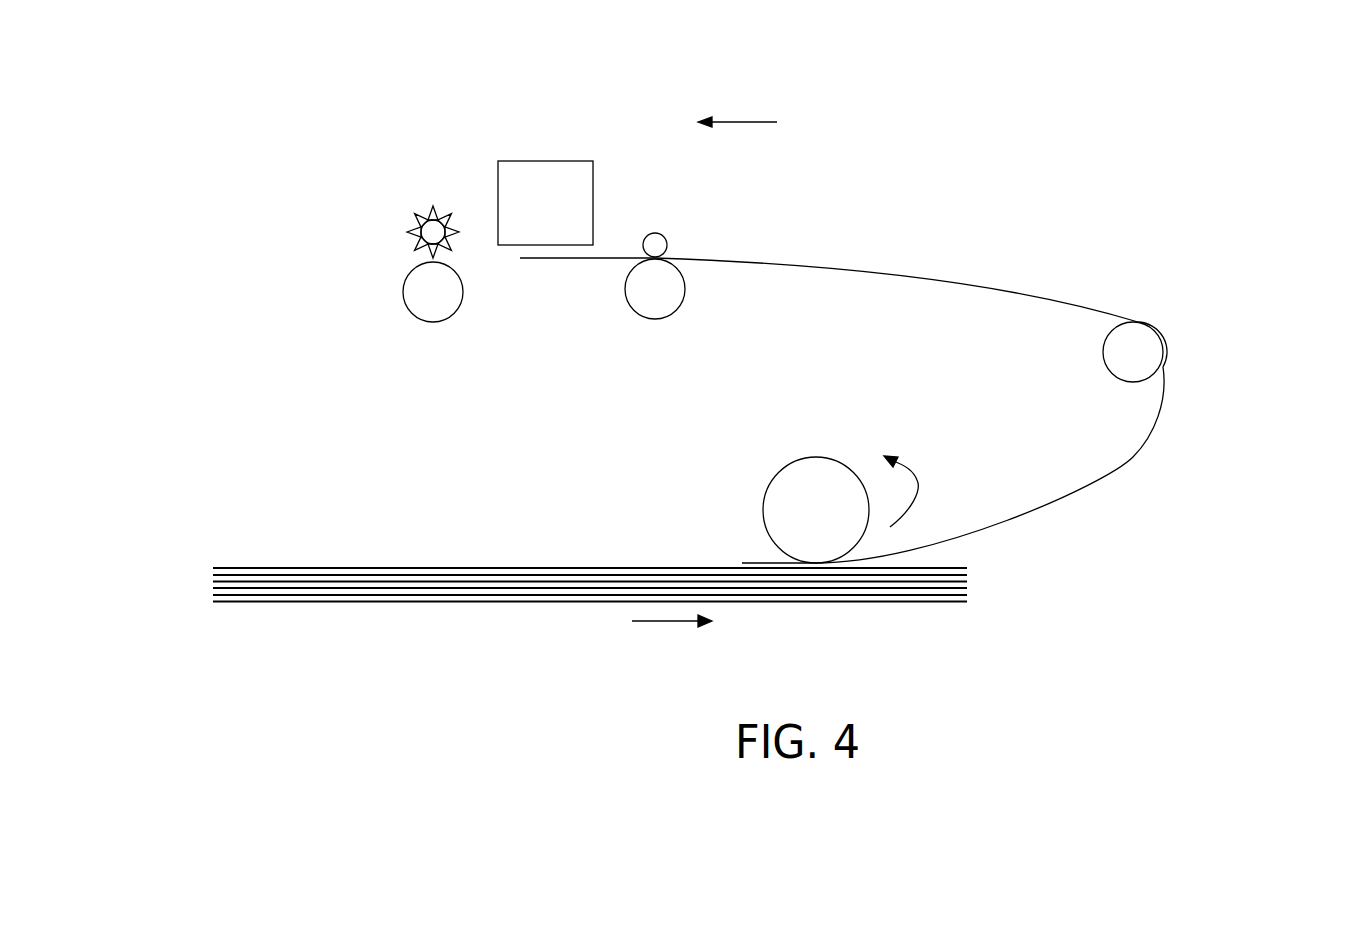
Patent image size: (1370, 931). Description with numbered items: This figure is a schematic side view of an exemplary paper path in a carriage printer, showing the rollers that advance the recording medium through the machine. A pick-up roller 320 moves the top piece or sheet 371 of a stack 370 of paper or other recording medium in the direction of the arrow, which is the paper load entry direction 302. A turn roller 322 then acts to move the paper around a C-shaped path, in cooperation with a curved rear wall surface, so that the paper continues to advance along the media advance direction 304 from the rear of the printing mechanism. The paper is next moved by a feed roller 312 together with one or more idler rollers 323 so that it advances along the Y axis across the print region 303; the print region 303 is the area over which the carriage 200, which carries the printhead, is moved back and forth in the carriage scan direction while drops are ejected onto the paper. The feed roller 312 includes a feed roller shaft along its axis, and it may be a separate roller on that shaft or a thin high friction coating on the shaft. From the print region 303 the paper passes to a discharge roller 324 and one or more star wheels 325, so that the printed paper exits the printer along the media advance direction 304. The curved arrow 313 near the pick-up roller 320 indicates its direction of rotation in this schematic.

The carriage 200 is at (537, 161).
The media advance direction 304 is at (743, 122).
The star wheel 325 is at (428, 216).
The discharge roller 324 is at (457, 299).
The print region 303 is at (562, 250).
The idler roller 323 is at (658, 233).
The feed roller 312 is at (682, 293).
The turn roller 322 is at (1145, 335).
The top sheet 371 is at (1030, 523).
The pick-up roller 320 is at (782, 473).
The roller rotation direction 313 is at (917, 480).
The stack 370 is at (978, 582).
The paper load entry direction 302 is at (660, 623).